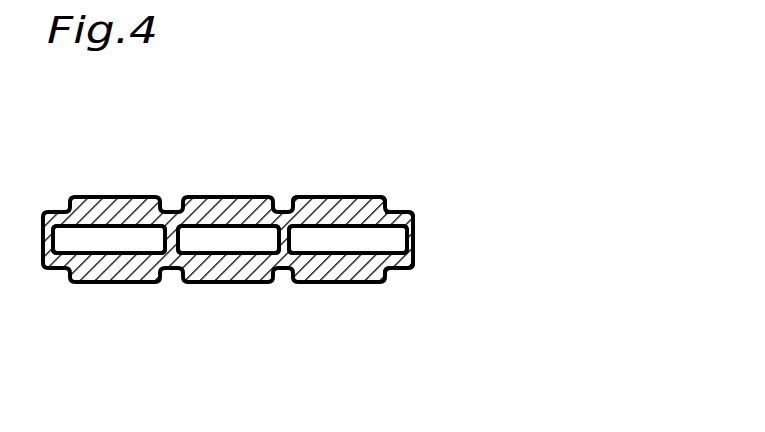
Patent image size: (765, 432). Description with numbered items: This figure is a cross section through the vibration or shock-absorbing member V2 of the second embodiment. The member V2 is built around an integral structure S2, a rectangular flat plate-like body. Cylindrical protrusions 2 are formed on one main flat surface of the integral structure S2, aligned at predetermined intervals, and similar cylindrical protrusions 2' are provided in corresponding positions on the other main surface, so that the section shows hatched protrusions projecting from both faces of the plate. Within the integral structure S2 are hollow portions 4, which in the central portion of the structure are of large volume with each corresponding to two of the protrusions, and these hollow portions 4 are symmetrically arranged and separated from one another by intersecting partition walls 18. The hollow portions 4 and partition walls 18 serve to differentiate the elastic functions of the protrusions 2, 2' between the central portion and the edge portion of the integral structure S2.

The cylindrical protrusions 2 is at (228, 185).
The cylindrical protrusions 2' is at (230, 312).
The integral structure S2 is at (373, 197).
The hollow portions 4 is at (383, 238).
The partition walls 18 is at (290, 240).
The vibration or shock-absorbing member V2 is at (512, 185).